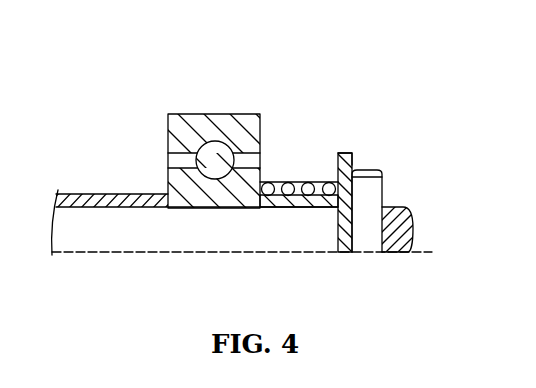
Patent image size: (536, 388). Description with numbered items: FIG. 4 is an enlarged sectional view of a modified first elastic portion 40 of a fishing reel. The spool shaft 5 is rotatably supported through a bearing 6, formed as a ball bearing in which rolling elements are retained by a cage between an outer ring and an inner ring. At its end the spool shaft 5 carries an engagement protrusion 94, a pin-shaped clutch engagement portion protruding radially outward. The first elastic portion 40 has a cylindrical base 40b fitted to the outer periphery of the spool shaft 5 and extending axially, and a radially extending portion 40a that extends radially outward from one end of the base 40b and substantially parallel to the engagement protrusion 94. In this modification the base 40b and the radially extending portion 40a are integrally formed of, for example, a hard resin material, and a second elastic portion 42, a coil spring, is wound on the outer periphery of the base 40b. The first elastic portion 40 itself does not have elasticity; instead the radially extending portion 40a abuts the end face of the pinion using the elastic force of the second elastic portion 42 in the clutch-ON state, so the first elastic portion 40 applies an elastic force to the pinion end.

The spool shaft 5 is at (113, 223).
The bearing 6 is at (226, 127).
The second elastic portion 42 is at (268, 181).
The first elastic portion 40 is at (345, 150).
The radially extending portion 40a is at (354, 160).
The base 40b is at (301, 208).
The engagement protrusion 94 is at (368, 192).